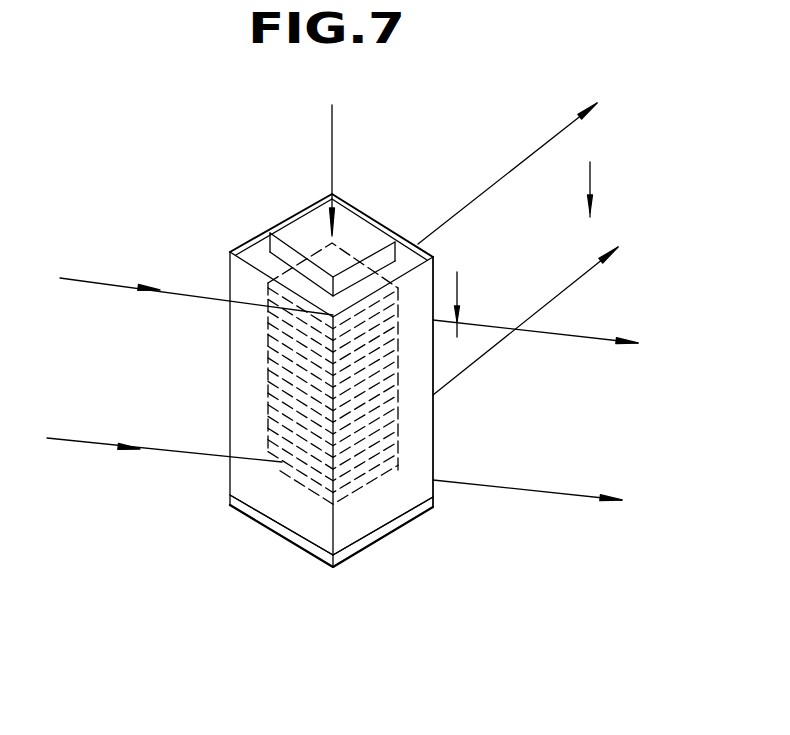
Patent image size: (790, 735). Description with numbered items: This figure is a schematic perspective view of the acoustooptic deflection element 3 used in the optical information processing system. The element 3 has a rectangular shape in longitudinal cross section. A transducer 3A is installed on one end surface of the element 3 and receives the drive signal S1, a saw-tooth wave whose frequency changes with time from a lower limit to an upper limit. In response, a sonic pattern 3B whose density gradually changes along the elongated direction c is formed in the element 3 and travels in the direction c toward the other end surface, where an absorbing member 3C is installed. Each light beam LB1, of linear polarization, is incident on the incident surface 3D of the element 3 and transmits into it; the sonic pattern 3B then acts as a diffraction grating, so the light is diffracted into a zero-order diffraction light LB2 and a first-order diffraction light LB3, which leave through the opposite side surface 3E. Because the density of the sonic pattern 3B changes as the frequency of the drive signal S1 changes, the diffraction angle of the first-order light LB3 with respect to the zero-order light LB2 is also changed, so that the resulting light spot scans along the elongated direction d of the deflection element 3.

The acoustooptic deflection element 3 is at (254, 240).
The transducer 3A is at (360, 232).
The sonic pattern 3B is at (357, 495).
The absorbing member 3C is at (398, 525).
The incident surface 3D is at (273, 508).
The exit side surface 3E is at (449, 424).
The drive signal S1 is at (332, 128).
The light beam LB1 is at (88, 279).
The zero-order diffraction light LB2 is at (583, 495).
The first-order diffraction light LB3 is at (578, 279).
The elongated direction c is at (457, 291).
The elongated direction d is at (590, 188).